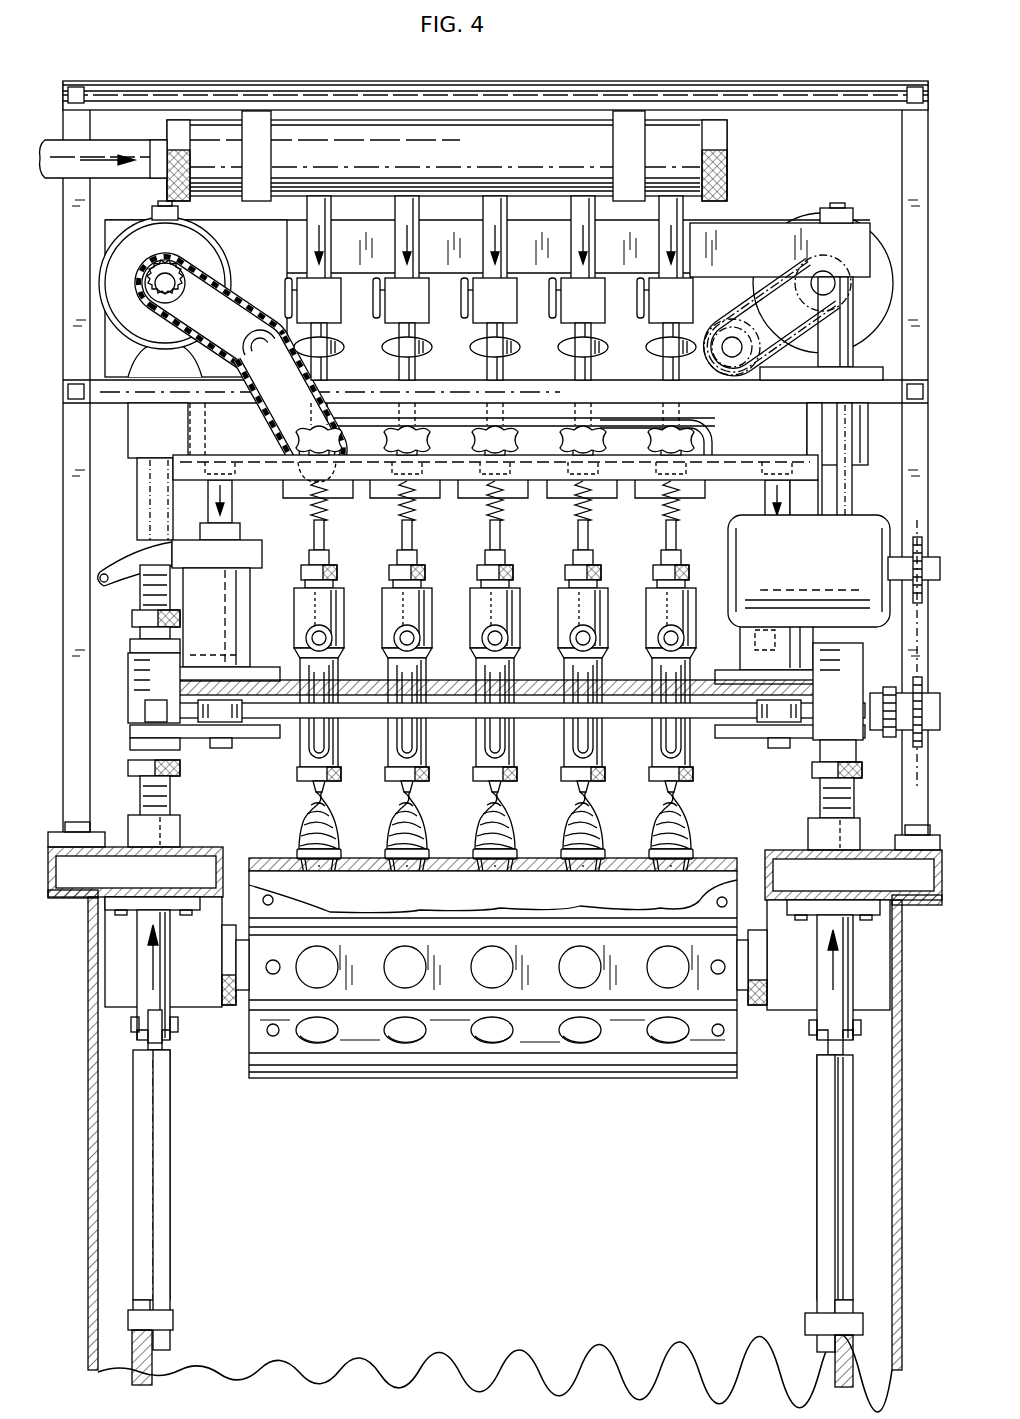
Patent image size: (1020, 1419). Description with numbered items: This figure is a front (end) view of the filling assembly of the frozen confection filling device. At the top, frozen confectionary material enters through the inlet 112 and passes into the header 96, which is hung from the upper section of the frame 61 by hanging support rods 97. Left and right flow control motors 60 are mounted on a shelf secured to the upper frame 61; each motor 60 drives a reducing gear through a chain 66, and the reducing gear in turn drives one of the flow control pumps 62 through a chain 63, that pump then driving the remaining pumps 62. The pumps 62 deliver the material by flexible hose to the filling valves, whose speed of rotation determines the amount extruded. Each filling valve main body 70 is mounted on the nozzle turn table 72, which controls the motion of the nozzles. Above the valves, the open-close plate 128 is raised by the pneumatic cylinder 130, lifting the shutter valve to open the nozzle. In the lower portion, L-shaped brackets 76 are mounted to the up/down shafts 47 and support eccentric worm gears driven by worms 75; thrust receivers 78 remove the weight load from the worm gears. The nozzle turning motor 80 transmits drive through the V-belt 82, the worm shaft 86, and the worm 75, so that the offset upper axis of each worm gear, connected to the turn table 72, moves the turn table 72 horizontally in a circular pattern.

The up/down shaft 47 is at (172, 960).
The flow control motor 60 is at (140, 235).
The frame 61 is at (152, 97).
The flow control pump 62 is at (342, 496).
The chain 63 is at (263, 413).
The chain 66 is at (210, 270).
The filling valve main body 70 is at (392, 742).
The nozzle turn table 72 is at (356, 690).
The worm 75 is at (890, 742).
The L-shaped bracket 76 is at (195, 740).
The thrust receiver 78 is at (237, 722).
The nozzle turning motor 80 is at (870, 515).
The V-belt 82 is at (920, 658).
The worm shaft 86 is at (536, 718).
The header 96 is at (468, 130).
The hanging support rod 97 is at (256, 120).
The inlet 112 is at (112, 145).
The open-close plate 128 is at (262, 470).
The pneumatic cylinder 130 is at (240, 618).